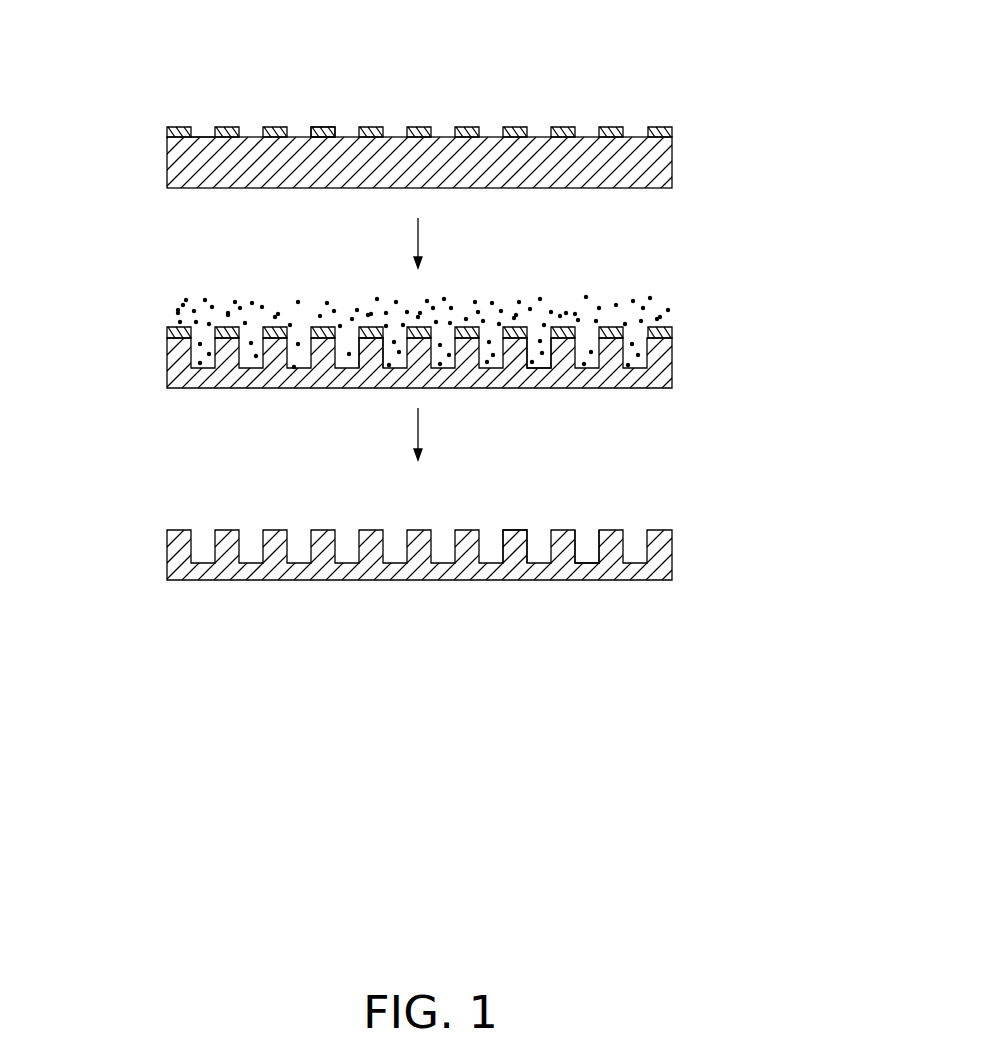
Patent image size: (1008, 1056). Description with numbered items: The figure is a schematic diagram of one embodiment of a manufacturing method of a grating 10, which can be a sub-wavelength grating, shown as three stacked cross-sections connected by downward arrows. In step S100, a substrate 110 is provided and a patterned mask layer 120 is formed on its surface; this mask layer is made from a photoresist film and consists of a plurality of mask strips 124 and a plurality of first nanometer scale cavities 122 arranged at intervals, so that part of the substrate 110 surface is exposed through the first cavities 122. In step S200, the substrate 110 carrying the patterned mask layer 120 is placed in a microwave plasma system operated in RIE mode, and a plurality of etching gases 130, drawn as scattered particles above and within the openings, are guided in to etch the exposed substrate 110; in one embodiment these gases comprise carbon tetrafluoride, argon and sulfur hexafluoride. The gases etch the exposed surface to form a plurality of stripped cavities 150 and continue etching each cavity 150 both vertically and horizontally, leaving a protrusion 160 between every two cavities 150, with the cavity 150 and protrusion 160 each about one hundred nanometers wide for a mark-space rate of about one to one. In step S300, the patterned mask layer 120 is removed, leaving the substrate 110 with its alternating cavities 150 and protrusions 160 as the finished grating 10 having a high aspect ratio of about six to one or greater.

The grating 10 is at (430, 510).
The substrate 110 is at (660, 167).
The patterned mask layer 120 is at (665, 128).
The first nanometer scale cavities 122 is at (203, 131).
The mask strips 124 is at (325, 132).
The etching gases 130 is at (281, 296).
The stripped cavities 150 is at (537, 357).
The protrusion 160 is at (370, 358).
The step S100 is at (161, 74).
The step S200 is at (160, 291).
The step S300 is at (179, 507).